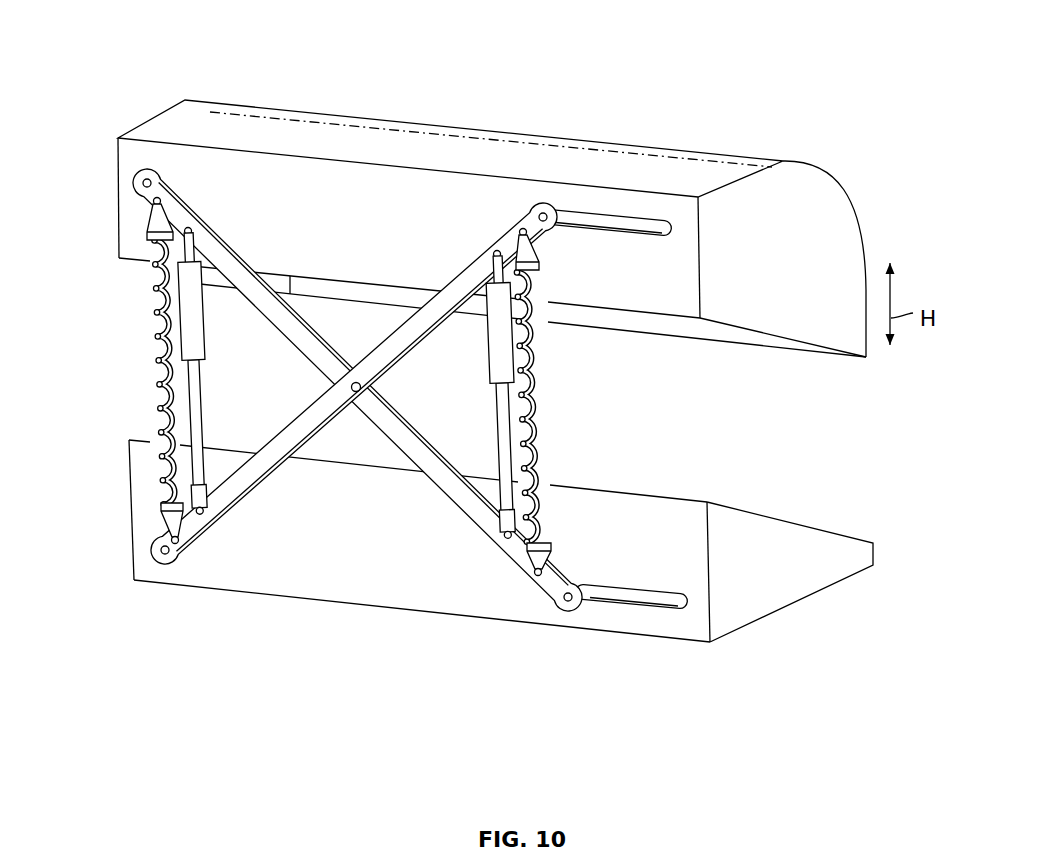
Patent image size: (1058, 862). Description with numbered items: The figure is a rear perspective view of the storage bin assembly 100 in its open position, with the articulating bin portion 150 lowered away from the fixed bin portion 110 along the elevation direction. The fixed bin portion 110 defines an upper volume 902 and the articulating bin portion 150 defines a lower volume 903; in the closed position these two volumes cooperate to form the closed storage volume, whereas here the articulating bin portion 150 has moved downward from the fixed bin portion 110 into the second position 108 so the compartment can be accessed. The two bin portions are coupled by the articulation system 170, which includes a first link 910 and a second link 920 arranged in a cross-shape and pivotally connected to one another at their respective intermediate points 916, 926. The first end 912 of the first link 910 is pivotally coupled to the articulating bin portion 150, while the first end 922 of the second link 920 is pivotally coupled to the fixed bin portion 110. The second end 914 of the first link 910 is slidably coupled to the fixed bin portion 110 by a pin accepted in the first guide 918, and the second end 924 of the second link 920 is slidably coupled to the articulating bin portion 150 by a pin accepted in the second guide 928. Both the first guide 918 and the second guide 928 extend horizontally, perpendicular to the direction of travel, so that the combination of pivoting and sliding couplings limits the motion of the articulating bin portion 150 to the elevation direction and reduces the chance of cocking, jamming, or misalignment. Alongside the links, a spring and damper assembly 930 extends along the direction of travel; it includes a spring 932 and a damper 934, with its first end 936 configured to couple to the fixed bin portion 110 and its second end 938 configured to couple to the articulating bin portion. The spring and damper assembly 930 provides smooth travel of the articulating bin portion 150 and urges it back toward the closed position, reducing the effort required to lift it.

The storage bin assembly 100 is at (722, 53).
The second position 108 is at (540, 664).
The fixed bin portion 110 is at (786, 209).
The articulating bin portion 150 is at (806, 556).
The articulation system 170 is at (376, 406).
The upper volume 902 is at (702, 369).
The lower volume 903 is at (783, 491).
The first link 910 is at (339, 390).
The first end of the first link 912 is at (119, 569).
The second end of the first link 914 is at (519, 193).
The intermediate point of the first link 916 is at (444, 236).
The first guide 918 is at (626, 220).
The second link 920 is at (307, 380).
The first end of the second link 922 is at (186, 165).
The second end of the second link 924 is at (521, 598).
The intermediate point of the second link 926 is at (352, 347).
The second guide 928 is at (661, 601).
The spring and damper assembly 930 is at (284, 387).
The spring 932 is at (148, 311).
The damper 934 is at (194, 424).
The first end of the spring and damper assembly 936 is at (174, 138).
The second end of the spring and damper assembly 938 is at (104, 531).